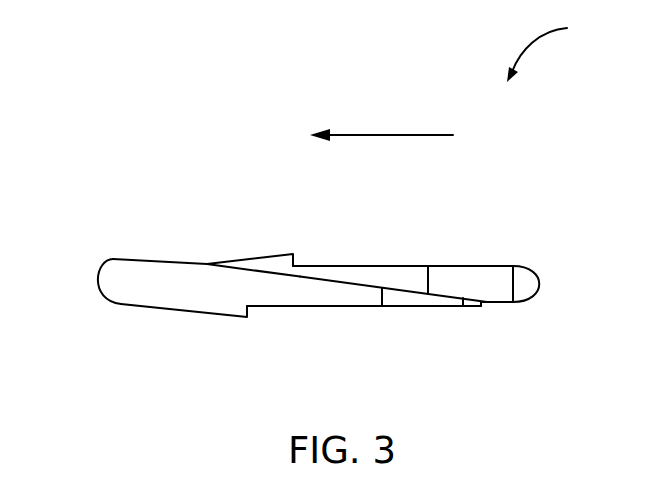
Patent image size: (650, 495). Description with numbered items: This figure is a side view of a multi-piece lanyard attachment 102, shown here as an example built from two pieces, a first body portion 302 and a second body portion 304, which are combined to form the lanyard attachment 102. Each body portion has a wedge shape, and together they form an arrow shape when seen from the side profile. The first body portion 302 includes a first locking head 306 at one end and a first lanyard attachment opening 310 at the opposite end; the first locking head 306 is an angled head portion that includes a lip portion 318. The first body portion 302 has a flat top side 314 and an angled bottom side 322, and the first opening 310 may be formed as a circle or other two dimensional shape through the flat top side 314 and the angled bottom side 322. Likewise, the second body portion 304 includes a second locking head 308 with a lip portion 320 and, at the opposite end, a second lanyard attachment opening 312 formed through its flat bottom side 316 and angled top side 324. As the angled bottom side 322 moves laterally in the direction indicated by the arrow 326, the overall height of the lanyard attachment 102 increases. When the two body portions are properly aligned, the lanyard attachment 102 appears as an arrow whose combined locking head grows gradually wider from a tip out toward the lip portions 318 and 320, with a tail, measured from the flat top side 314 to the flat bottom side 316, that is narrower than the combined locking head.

The lanyard attachment 102 is at (558, 48).
The first body portion 302 is at (540, 275).
The second body portion 304 is at (97, 277).
The first locking head 306 is at (253, 258).
The second locking head 308 is at (150, 307).
The first lanyard attachment opening 310 is at (482, 271).
The second lanyard attachment opening 312 is at (445, 300).
The flat top side 314 is at (428, 265).
The flat bottom side 316 is at (337, 307).
The lip portion 318 is at (295, 254).
The lip portion 320 is at (250, 312).
The angled bottom side 322 is at (355, 265).
The angled top side 324 is at (241, 270).
The arrow 326 is at (388, 133).